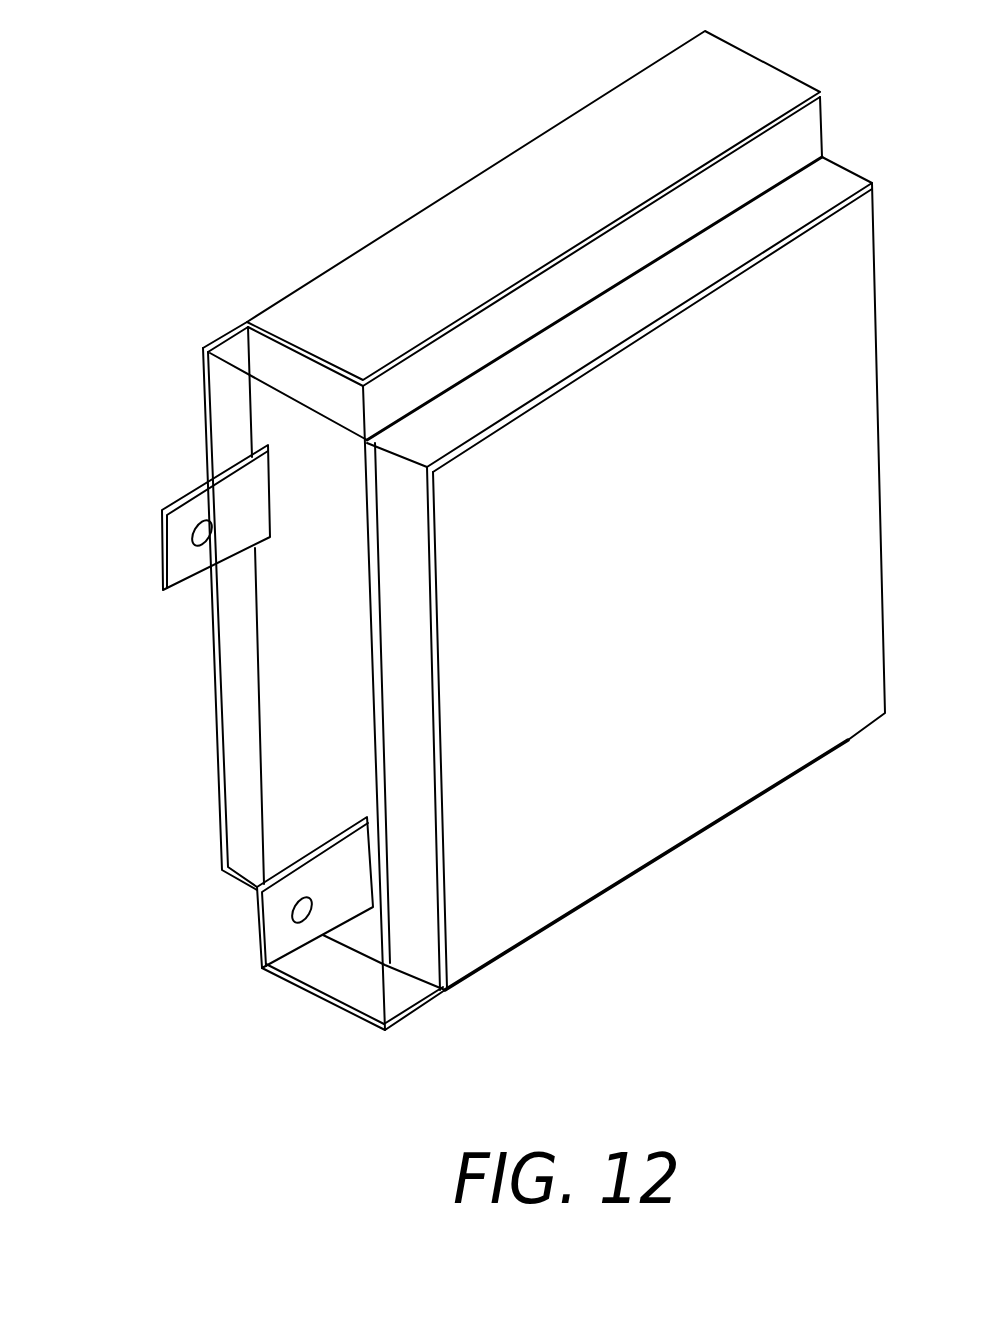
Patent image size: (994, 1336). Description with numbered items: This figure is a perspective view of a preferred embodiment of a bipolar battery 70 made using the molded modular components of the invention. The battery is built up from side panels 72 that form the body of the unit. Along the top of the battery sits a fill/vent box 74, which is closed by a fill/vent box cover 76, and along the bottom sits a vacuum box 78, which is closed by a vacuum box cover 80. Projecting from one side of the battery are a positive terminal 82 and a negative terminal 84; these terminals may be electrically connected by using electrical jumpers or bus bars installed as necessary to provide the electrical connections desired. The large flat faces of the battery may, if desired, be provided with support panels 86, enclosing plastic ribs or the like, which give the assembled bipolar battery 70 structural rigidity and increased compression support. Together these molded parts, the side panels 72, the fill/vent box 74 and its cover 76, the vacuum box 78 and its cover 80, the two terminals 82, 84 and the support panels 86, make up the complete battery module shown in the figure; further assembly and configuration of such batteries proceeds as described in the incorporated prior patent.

The bipolar battery 70 is at (165, 417).
The side panels 72 is at (345, 498).
The fill/vent box 74 is at (273, 358).
The fill/vent box cover 76 is at (383, 277).
The vacuum box 78 is at (327, 958).
The vacuum box cover 80 is at (350, 1007).
The positive terminal 82 is at (177, 497).
The negative terminal 84 is at (257, 928).
The support panels 86 is at (680, 614).